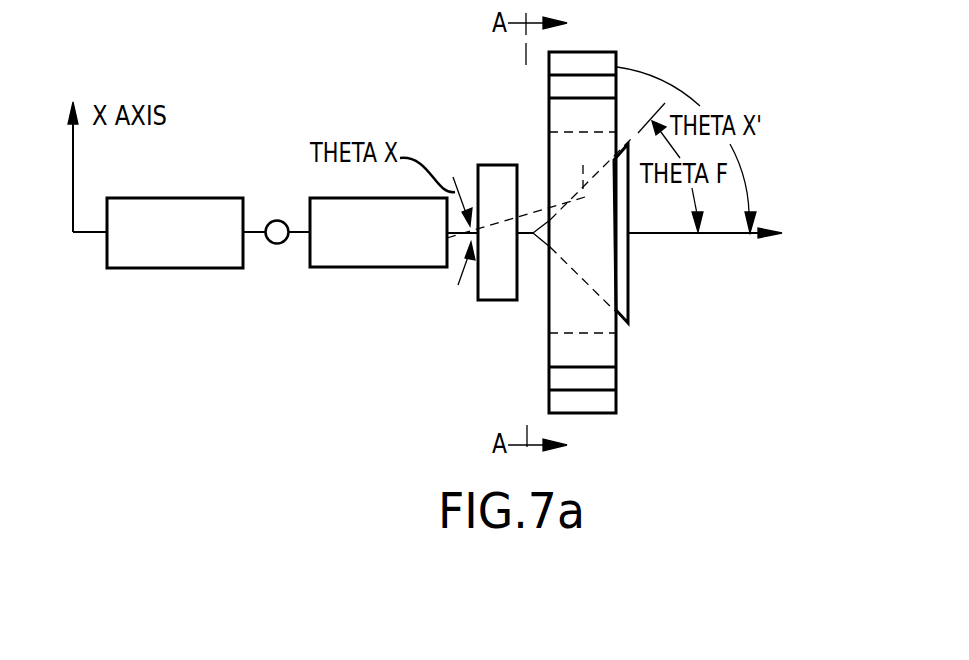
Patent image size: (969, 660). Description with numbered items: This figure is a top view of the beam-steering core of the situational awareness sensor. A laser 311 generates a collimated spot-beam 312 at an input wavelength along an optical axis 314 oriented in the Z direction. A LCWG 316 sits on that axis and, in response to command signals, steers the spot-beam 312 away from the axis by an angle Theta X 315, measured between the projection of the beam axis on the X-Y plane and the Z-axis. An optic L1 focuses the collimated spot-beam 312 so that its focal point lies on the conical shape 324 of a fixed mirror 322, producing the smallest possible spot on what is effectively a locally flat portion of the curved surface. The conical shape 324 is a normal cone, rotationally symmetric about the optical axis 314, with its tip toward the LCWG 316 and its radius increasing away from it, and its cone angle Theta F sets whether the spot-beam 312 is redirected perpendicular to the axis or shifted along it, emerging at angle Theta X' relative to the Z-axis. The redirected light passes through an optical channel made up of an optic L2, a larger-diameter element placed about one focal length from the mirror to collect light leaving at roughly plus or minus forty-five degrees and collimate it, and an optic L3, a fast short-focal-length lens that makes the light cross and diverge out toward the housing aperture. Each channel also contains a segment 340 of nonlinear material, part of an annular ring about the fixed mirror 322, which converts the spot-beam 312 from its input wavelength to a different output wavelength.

The laser 311 is at (175, 268).
The spot-beam 312 is at (277, 244).
The LCWG 316 is at (368, 267).
The optical axis 314 is at (457, 238).
The Theta X 315 is at (540, 212).
The conical shape 324 is at (580, 275).
The fixed mirror 322 is at (625, 287).
The segment of NLM 340 is at (558, 88).
The optic L1 is at (477, 178).
The optic L2 is at (608, 113).
The optic L3 is at (605, 60).